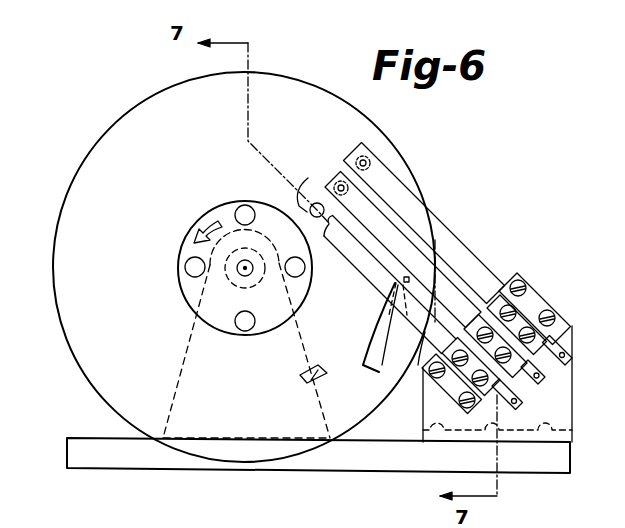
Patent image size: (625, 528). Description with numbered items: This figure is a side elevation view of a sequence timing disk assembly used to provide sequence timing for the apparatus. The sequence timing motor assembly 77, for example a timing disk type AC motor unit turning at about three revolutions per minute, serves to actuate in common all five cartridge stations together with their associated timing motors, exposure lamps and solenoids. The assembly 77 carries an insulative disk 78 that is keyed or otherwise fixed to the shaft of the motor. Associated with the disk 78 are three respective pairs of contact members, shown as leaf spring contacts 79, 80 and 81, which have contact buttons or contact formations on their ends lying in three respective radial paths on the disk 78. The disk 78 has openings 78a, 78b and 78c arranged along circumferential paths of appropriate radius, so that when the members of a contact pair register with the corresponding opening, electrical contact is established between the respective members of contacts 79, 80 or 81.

The sequence timing motor assembly 77 is at (119, 121).
The insulative disk 78 is at (102, 375).
The opening 78a is at (322, 170).
The opening 78b is at (384, 372).
The opening 78c is at (302, 379).
The leaf spring contacts 79 is at (380, 283).
The leaf spring contacts 80 is at (406, 198).
The leaf spring contacts 81 is at (400, 241).